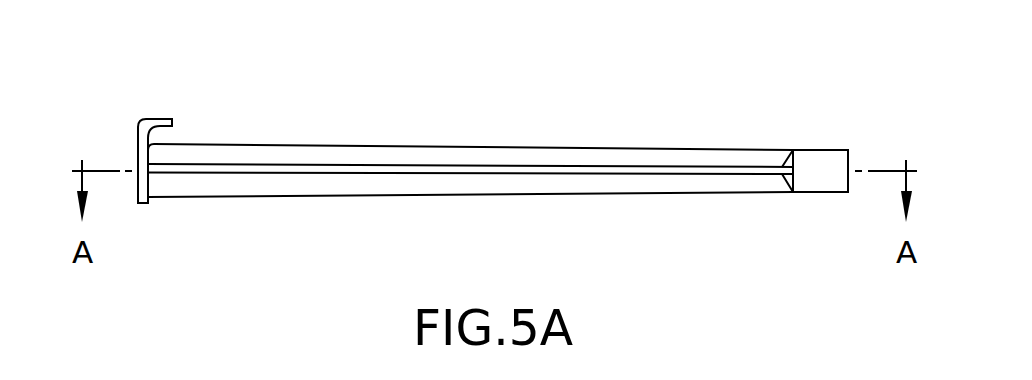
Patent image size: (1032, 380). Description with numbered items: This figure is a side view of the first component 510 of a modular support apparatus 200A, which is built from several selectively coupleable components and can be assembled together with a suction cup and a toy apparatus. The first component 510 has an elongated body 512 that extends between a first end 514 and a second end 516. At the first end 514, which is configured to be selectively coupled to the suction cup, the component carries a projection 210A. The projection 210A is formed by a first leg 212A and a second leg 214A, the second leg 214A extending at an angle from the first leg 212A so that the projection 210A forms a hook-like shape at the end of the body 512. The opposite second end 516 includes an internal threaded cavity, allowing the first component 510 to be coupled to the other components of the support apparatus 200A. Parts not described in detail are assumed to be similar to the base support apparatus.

The modular support apparatus 200A is at (763, 78).
The projection 210A is at (156, 92).
The first leg 212A is at (137, 135).
The second leg 214A is at (164, 118).
The first component 510 is at (522, 122).
The body 512 is at (542, 194).
The first end 514 is at (180, 143).
The second end 516 is at (803, 192).